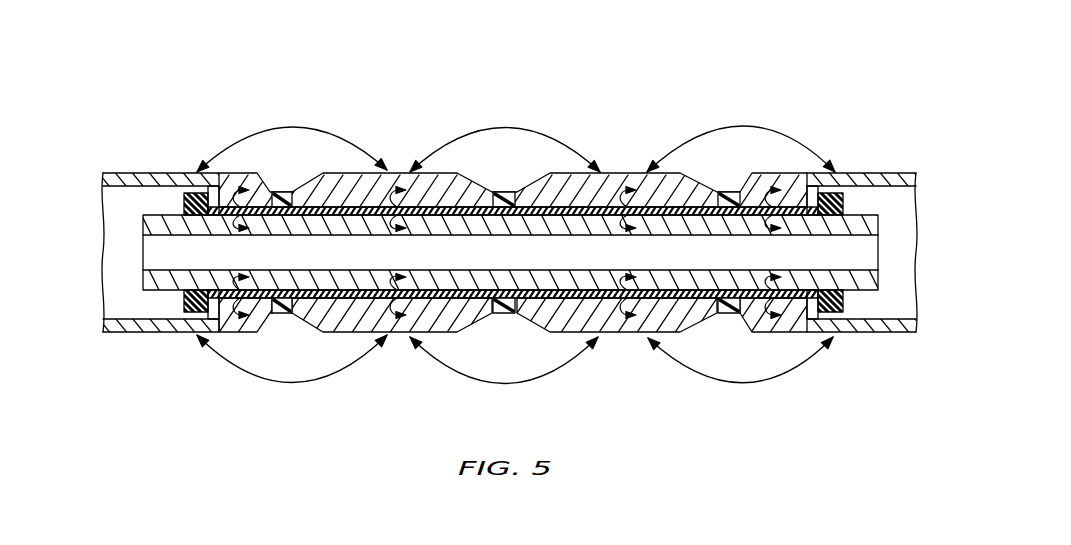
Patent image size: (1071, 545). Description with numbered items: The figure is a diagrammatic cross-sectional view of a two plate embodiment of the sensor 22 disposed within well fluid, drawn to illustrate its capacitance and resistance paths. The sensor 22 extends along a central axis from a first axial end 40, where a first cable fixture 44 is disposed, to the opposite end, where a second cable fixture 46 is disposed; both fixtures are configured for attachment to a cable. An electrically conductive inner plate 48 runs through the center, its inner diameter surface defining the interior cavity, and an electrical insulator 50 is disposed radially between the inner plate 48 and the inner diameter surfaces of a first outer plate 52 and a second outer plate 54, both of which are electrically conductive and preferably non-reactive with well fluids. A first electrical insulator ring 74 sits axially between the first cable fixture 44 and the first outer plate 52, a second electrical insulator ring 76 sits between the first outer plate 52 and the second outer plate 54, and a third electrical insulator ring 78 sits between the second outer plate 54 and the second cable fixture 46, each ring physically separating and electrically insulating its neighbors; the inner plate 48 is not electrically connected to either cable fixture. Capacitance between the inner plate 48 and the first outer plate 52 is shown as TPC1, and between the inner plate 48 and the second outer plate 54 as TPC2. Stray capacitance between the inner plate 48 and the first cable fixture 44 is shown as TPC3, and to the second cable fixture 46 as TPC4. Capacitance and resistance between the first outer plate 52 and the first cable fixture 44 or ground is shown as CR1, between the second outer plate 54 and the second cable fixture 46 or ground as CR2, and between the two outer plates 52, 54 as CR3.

The sensor 22 is at (882, 116).
The first axial end 40 is at (108, 344).
The first cable fixture 44 is at (153, 323).
The second cable fixture 46 is at (880, 331).
The inner plate 48 is at (143, 283).
The electrical insulator 50 is at (690, 312).
The first outer plate 52 is at (340, 328).
The second outer plate 54 is at (578, 324).
The first electrical insulator ring 74 is at (280, 316).
The second electrical insulator ring 76 is at (503, 318).
The third electrical insulator ring 78 is at (723, 318).
The capacitance between inner plate and first outer plate TPC1 is at (368, 206).
The capacitance between inner plate and second outer plate TPC2 is at (610, 205).
The stray capacitance between inner plate and first cable fixture TPC3 is at (207, 205).
The stray capacitance between inner plate and second cable fixture TPC4 is at (743, 192).
The capacitance and resistance between first outer plate and first cable fixture CR1 is at (291, 125).
The capacitance and resistance between second outer plate and second cable fixture CR2 is at (748, 125).
The capacitance and resistance between first and second outer plates CR3 is at (505, 125).